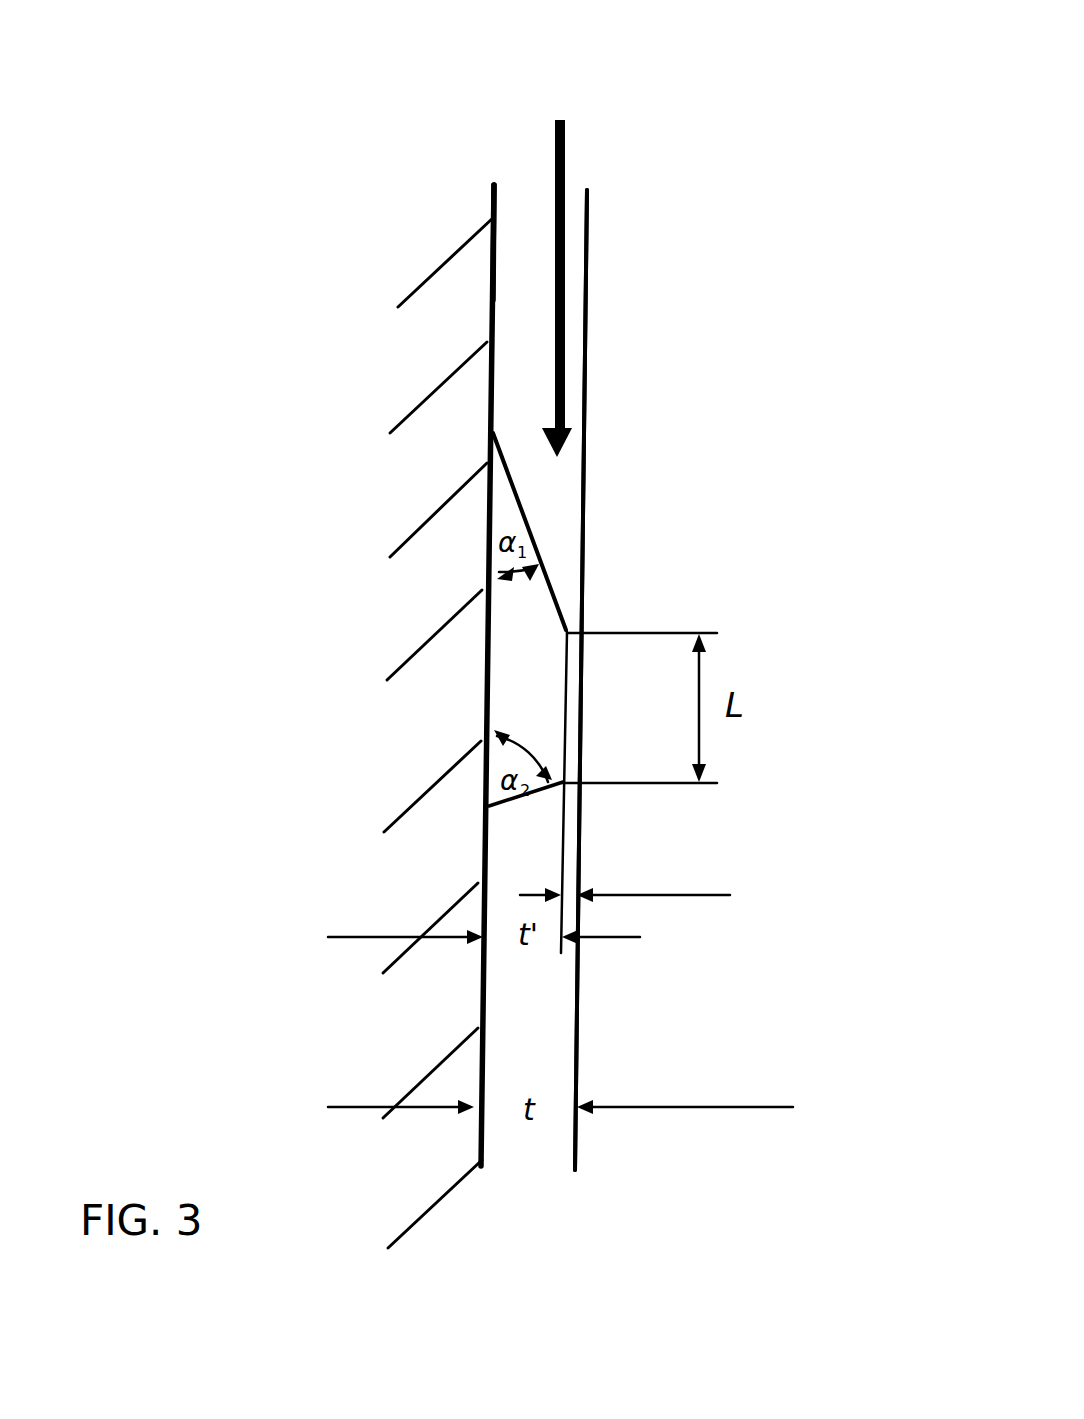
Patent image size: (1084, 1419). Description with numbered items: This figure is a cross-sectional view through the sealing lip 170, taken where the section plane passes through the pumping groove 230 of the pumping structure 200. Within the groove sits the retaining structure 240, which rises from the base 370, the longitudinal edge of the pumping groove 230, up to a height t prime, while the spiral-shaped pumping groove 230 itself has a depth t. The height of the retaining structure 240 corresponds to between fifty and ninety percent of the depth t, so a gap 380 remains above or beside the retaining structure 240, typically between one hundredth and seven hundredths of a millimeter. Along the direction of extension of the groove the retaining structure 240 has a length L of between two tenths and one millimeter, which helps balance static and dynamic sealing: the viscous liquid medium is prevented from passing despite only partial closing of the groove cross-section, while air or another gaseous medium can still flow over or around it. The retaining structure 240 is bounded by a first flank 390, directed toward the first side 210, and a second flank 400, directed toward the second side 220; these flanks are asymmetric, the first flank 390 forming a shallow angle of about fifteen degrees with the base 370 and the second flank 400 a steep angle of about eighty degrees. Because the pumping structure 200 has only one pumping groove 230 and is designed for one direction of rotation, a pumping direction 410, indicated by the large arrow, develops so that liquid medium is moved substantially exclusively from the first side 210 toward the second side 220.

The sealing lip 170 is at (443, 208).
The first side 210 is at (625, 84).
The pumping direction 410 is at (565, 167).
The base 370 is at (500, 313).
The first flank 390 is at (530, 520).
The retaining structure 240 is at (510, 662).
The second flank 400 is at (517, 793).
The gap 380 is at (567, 892).
The pumping groove 230 is at (527, 1132).
The pumping structure 200 is at (581, 680).
The second side 220 is at (512, 1244).